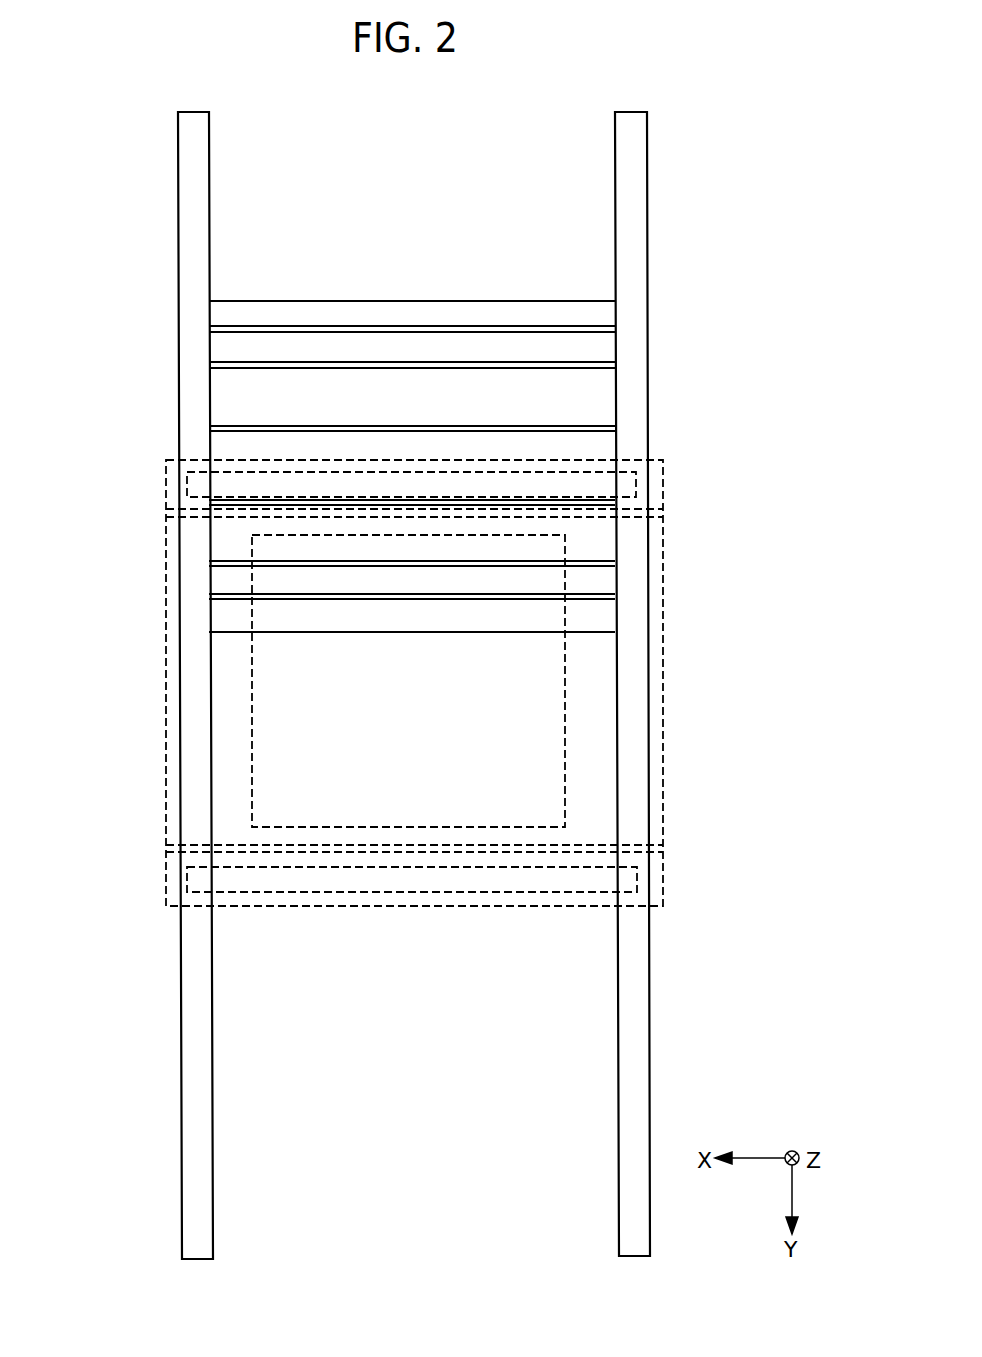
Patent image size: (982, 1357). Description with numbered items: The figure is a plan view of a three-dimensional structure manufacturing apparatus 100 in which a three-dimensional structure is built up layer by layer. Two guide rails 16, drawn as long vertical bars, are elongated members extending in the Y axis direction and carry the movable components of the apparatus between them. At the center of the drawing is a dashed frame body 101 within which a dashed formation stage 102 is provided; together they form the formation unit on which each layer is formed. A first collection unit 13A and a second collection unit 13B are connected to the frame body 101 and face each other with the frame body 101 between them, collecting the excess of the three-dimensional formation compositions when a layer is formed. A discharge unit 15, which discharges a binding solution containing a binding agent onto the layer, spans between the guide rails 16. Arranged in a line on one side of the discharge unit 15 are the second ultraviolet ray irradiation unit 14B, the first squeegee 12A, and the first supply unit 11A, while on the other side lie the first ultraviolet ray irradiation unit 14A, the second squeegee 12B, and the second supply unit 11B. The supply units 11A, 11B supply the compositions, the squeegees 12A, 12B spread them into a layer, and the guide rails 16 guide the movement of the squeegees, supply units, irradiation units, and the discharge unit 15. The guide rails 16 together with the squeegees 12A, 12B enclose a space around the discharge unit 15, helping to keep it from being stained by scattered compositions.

The three-dimensional structure manufacturing apparatus 100 is at (786, 186).
The guide rails 16 is at (190, 366).
The first supply unit 11A is at (599, 314).
The first squeegee 12A is at (599, 347).
The second ultraviolet ray irradiation unit 14B is at (599, 391).
The discharge unit 15 is at (599, 463).
The frame body 101 is at (663, 762).
The first collection unit 13A is at (635, 481).
The formation stage 102 is at (252, 788).
The first ultraviolet ray irradiation unit 14A is at (600, 542).
The second squeegee 12B is at (600, 583).
The second supply unit 11B is at (600, 618).
The second collection unit 13B is at (643, 872).